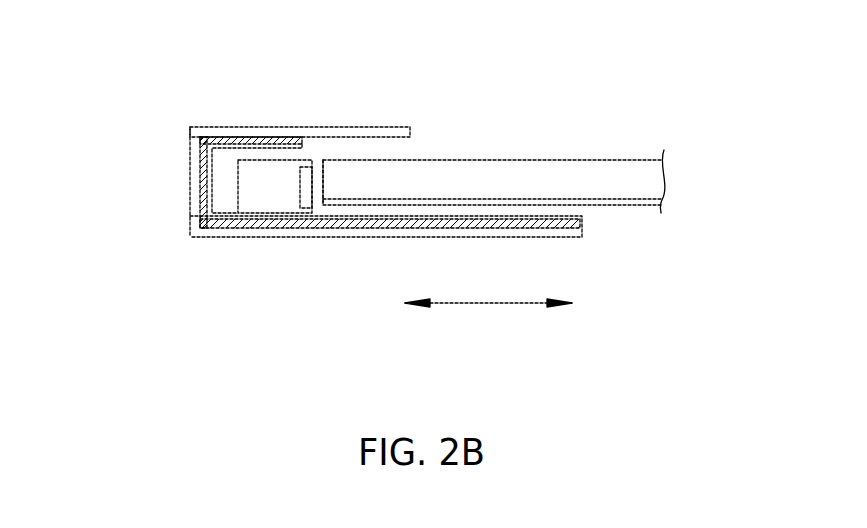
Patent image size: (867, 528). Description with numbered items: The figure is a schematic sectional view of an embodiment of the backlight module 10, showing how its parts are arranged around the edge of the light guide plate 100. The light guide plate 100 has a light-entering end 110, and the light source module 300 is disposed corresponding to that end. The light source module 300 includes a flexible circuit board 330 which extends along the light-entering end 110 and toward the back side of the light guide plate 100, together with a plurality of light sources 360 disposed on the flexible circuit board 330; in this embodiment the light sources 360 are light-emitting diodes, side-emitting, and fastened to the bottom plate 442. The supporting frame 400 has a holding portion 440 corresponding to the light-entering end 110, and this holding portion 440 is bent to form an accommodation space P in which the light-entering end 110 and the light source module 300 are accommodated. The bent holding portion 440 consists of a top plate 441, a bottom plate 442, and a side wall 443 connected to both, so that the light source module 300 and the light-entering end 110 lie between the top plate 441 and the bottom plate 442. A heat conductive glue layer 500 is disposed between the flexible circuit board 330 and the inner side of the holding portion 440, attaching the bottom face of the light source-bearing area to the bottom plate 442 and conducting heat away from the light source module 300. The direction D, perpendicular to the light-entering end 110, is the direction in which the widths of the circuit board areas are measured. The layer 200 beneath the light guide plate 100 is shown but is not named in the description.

The backlight module 10 is at (155, 50).
The light guide plate 100 is at (620, 168).
The light-entering end 110 is at (320, 172).
The support layer 200 is at (632, 205).
The light source module 300 is at (302, 317).
The flexible circuit board 330 is at (233, 215).
The light sources 360 is at (280, 193).
The supporting frame 400 is at (373, 124).
The holding portion 440 is at (110, 121).
The top plate 441 is at (223, 134).
The bottom plate 442 is at (215, 231).
The side wall 443 is at (198, 177).
The heat conductive glue layer 500 is at (583, 228).
The accommodation space P is at (304, 139).
The direction D is at (488, 319).